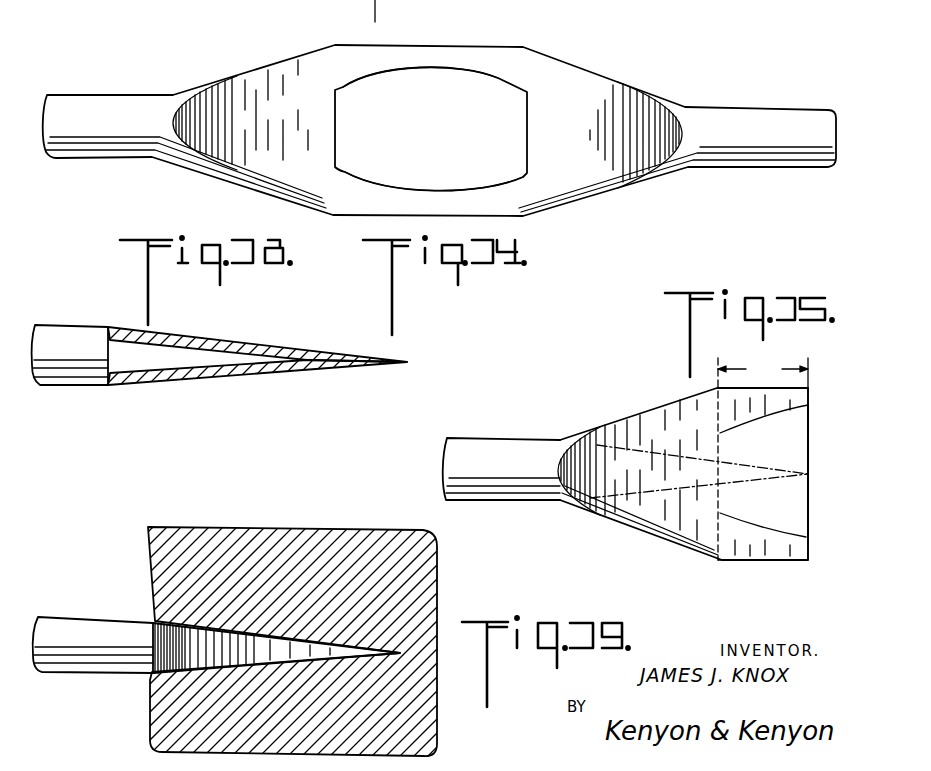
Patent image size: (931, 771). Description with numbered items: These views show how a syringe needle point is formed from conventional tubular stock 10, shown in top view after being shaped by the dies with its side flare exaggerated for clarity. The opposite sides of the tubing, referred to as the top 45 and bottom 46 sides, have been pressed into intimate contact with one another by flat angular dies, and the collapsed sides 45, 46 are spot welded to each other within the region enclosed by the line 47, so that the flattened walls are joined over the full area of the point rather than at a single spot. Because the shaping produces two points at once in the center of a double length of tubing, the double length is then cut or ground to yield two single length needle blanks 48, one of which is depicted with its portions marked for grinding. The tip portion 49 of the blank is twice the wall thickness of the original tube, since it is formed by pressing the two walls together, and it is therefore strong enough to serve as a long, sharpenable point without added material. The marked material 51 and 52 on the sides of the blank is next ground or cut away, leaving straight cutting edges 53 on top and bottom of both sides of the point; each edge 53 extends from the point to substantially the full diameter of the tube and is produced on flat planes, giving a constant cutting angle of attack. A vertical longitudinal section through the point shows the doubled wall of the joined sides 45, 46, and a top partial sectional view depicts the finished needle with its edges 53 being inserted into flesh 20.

In FIG. 14, the tubular stock 10 is at (85, 95).
In FIG. 18, the tubular stock 10 is at (53, 325).
In FIG. 15, the tubular stock 10 is at (495, 440).
In FIG. 19, the tubular stock 10 is at (57, 617).
In FIG. 14, the top side 45 is at (375, 68).
In FIG. 18, the top side 45 is at (260, 340).
In FIG. 15, the top side 45 is at (782, 451).
In FIG. 18, the bottom side 46 is at (228, 380).
In FIG. 14, the weld area line 47 is at (495, 78).
In FIG. 15, the weld area line 47 is at (797, 413).
In FIG. 15, the single length needle blank 48 is at (645, 393).
In FIG. 15, the tip portion 49 is at (763, 458).
In FIG. 15, the removed material 51 is at (800, 440).
In FIG. 15, the removed material 52 is at (800, 520).
In FIG. 19, the workpiece block 20 is at (242, 583).
In FIG. 19, the cutting edges 53 is at (305, 637).